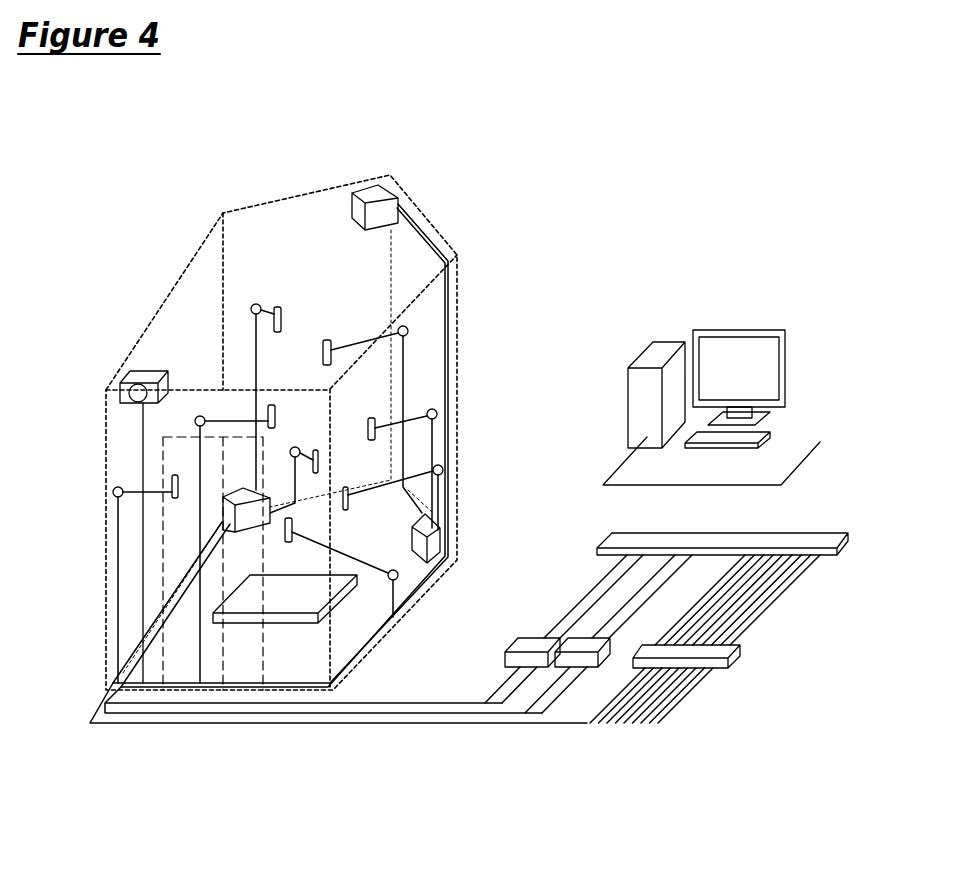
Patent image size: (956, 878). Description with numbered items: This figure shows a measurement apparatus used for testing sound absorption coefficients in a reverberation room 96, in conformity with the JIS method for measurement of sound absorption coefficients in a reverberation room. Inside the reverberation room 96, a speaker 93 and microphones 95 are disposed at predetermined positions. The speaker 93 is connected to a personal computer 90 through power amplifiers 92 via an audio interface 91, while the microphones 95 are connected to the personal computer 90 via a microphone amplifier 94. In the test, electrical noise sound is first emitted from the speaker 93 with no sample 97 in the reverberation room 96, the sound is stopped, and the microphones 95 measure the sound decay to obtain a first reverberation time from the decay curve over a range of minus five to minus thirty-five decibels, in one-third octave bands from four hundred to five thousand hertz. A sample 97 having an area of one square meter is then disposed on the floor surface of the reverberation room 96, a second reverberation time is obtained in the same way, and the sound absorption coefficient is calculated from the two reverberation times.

The personal computer 90 is at (747, 326).
The audio interface 91 is at (827, 533).
The power amplifiers 92 is at (512, 642).
The speaker 93 is at (145, 372).
The microphone amplifier 94 is at (738, 657).
The microphones 95 is at (278, 306).
The reverberation room 96 is at (339, 185).
The sample 97 is at (240, 626).